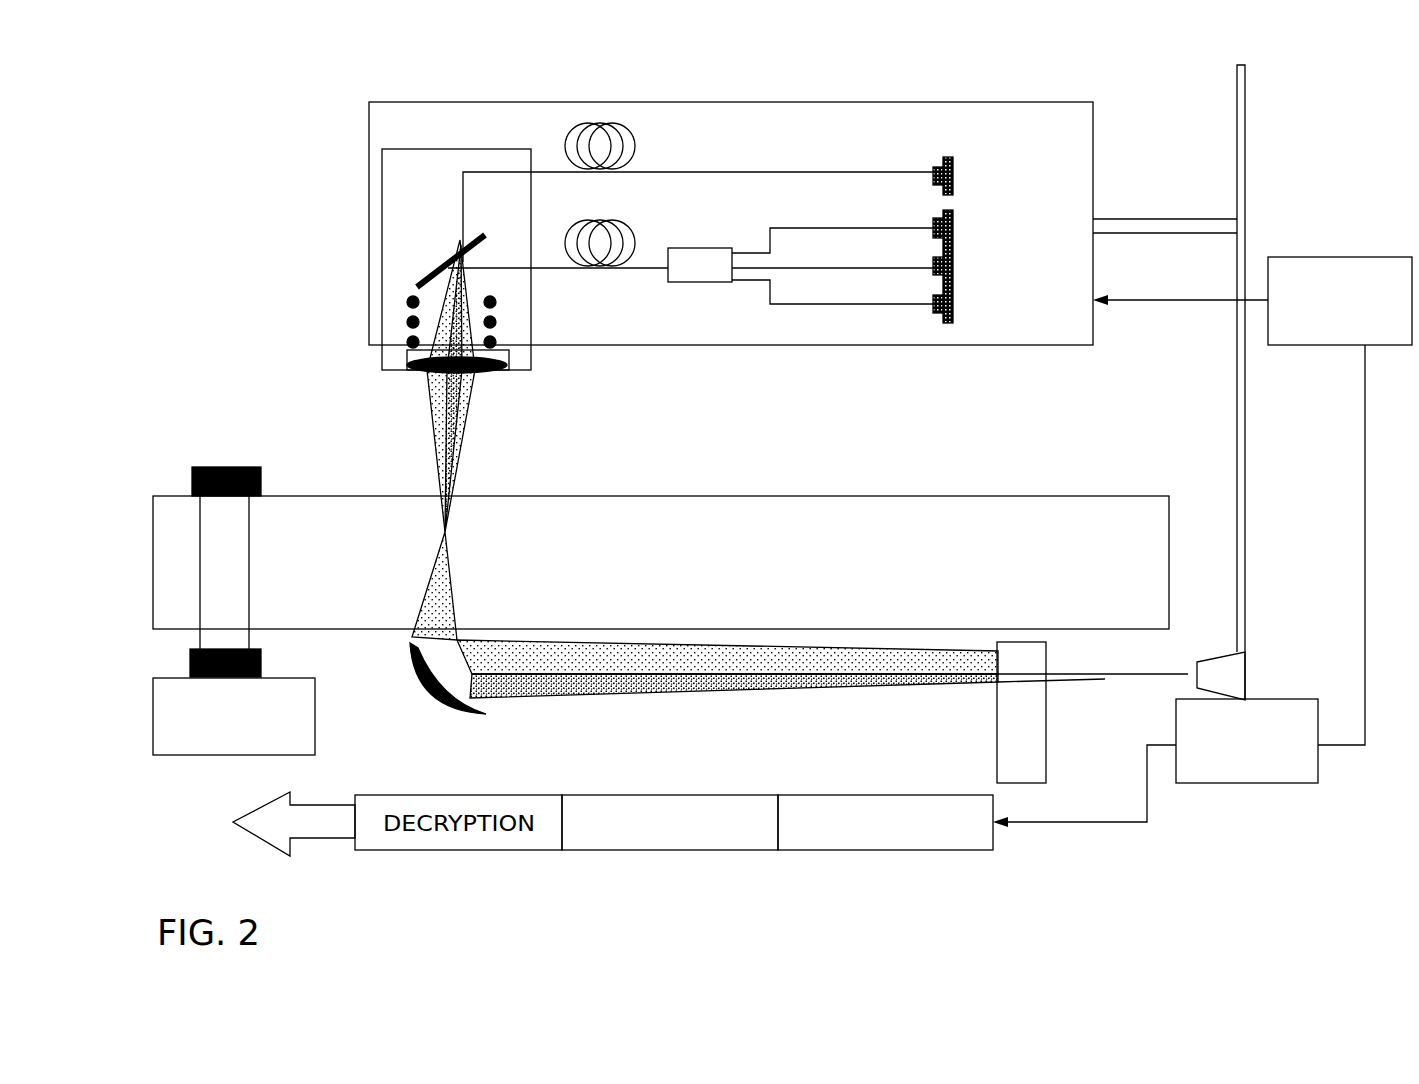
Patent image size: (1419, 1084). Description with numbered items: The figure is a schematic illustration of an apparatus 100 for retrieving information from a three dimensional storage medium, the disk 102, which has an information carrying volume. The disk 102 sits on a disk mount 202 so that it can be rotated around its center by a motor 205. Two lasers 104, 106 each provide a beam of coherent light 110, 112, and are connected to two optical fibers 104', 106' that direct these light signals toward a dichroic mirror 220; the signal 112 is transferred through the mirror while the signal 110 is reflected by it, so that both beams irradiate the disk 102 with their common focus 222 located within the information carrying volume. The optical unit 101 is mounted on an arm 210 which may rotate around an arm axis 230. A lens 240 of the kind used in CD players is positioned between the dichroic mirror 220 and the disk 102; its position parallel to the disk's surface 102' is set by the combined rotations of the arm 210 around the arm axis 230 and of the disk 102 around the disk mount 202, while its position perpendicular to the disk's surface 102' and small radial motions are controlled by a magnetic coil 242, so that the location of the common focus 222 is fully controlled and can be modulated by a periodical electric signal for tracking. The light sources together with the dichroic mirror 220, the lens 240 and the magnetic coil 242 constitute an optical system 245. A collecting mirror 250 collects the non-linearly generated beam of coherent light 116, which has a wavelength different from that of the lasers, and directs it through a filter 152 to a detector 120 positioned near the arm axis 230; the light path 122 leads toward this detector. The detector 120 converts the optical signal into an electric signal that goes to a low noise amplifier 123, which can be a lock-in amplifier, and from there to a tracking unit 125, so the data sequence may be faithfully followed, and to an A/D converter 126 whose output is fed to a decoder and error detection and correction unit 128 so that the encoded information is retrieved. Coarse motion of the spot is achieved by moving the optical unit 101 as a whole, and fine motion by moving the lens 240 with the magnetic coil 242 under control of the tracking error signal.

The apparatus 100 is at (1302, 129).
The optical unit 101 is at (803, 345).
The disk 102 is at (710, 572).
The disk's surface 102' is at (661, 542).
The laser 104 is at (986, 162).
The optical fiber 104' is at (698, 192).
The laser 106 is at (986, 266).
The optical fiber 106' is at (690, 272).
The beam of coherent light 110 is at (440, 317).
The beam of coherent light 112 is at (453, 306).
The beam of coherent light 116 is at (648, 693).
The detector 120 is at (1248, 677).
The detected light path 122 is at (1100, 680).
The low noise amplifier 123 is at (1245, 783).
The tracking unit 125 is at (1318, 257).
The A/D converter 126 is at (878, 850).
The decoder and error detection and correction (ECC) unit 128 is at (672, 850).
The filter 152 is at (1048, 752).
The disk mount 202 is at (219, 572).
The motor 205 is at (160, 745).
The arm 210 is at (1168, 219).
The dichroic mirror 220 is at (468, 238).
The common focus 222 is at (440, 532).
The arm axis 230 is at (1248, 520).
The lens 240 is at (428, 377).
The magnetic coil 242 is at (407, 344).
The optical system 245 is at (508, 370).
The collecting mirror 250 is at (425, 702).